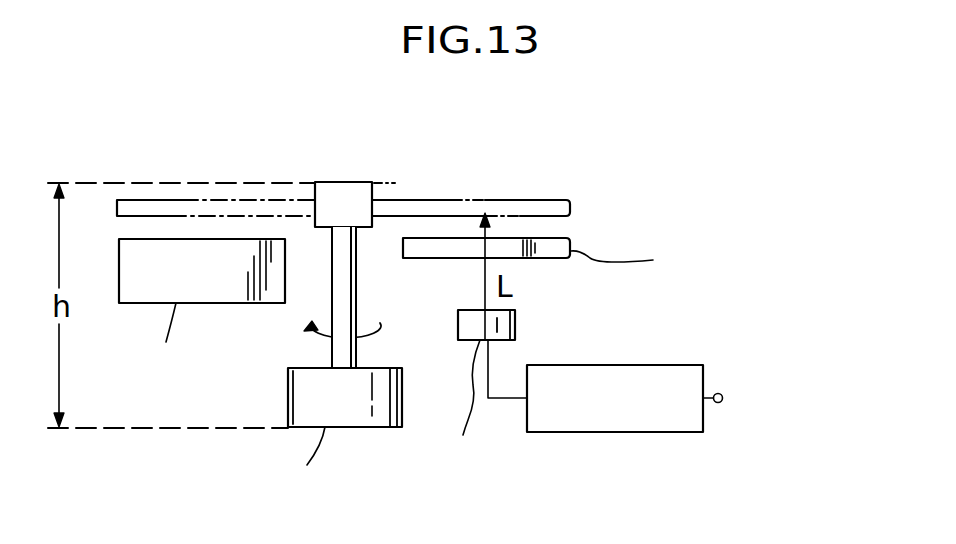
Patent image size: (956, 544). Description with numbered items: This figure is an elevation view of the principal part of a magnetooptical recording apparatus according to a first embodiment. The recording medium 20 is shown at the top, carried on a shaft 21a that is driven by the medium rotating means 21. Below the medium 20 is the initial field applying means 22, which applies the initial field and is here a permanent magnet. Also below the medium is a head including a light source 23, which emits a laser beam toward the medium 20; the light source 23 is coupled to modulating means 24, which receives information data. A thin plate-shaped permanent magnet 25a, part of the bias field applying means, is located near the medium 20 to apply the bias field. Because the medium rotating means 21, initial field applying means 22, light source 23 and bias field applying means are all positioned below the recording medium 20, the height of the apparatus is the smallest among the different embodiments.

The recording medium 20 is at (541, 194).
The medium rotating means 21 is at (334, 427).
The rotating shaft 21a is at (357, 305).
The initial field applying means 22 is at (182, 303).
The light source 23 is at (515, 333).
The modulating means 24 is at (630, 365).
The thin plate-shaped permanent magnet 25a is at (571, 247).